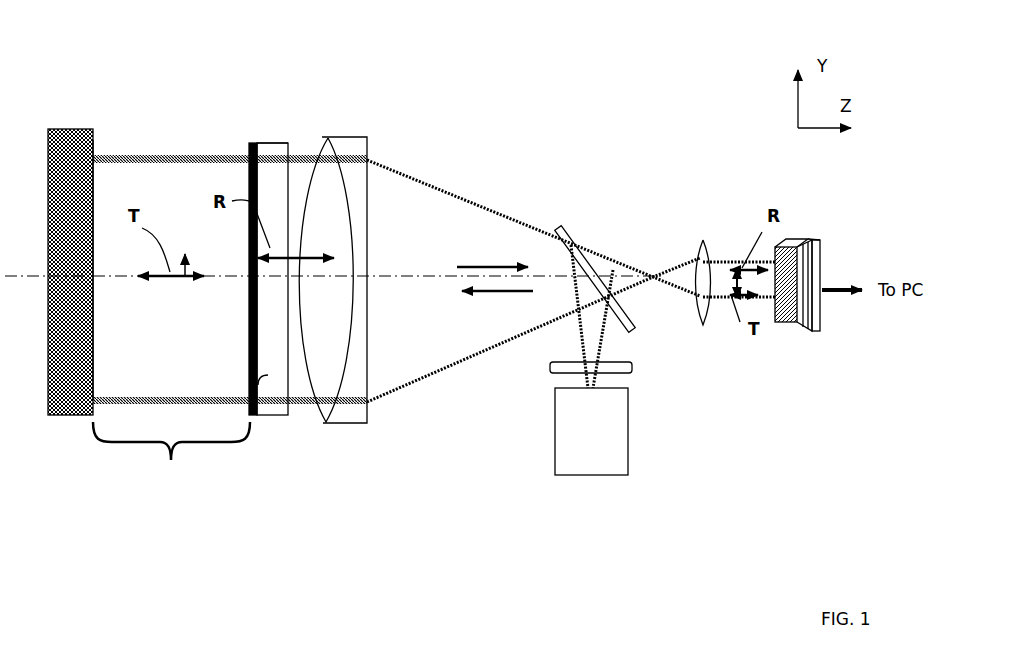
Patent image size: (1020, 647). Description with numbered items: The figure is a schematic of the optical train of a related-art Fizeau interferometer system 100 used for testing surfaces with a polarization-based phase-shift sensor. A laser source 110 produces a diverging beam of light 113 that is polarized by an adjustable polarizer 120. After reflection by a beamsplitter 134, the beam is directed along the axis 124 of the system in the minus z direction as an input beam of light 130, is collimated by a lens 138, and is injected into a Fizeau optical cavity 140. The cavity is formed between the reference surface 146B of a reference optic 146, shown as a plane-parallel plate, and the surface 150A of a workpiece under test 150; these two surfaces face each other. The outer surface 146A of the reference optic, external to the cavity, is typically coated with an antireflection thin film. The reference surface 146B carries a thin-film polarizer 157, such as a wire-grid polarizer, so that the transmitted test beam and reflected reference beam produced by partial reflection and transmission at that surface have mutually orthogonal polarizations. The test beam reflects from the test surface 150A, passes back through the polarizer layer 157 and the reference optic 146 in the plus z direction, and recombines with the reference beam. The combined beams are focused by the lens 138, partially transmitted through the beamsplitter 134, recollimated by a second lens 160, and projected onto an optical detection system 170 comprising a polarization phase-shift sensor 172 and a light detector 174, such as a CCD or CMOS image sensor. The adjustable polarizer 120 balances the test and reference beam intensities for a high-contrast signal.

The interferometer system 100 is at (522, 73).
The laser source 110 is at (571, 449).
The diverging beam of light 113 is at (578, 345).
The adjustable polarizer 120 is at (632, 370).
The axis 124 is at (420, 280).
The input beam of light 130 is at (485, 293).
The beamsplitter 134 is at (566, 222).
The lens 138 is at (367, 137).
The Fizeau optical cavity 140 is at (230, 323).
The reference optic 146 is at (268, 143).
The surface of the reference optic 146A is at (293, 147).
The reference surface 146B is at (272, 378).
The workpiece under test 150 is at (78, 128).
The test surface 150A is at (97, 150).
The thin-film polarizer 157 is at (250, 143).
The second lens 160 is at (700, 252).
The optical detection system 170 is at (813, 304).
The polarization phase-shift sensor 172 is at (798, 330).
The light detector 174 is at (820, 331).